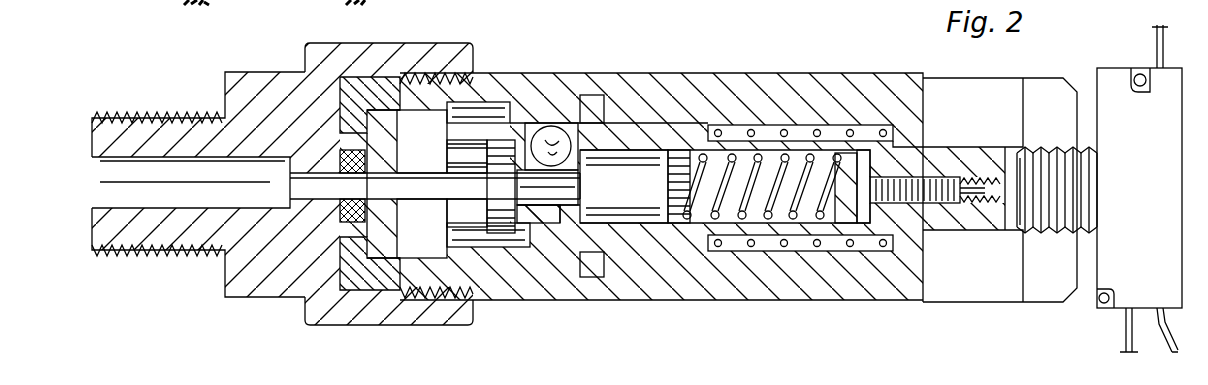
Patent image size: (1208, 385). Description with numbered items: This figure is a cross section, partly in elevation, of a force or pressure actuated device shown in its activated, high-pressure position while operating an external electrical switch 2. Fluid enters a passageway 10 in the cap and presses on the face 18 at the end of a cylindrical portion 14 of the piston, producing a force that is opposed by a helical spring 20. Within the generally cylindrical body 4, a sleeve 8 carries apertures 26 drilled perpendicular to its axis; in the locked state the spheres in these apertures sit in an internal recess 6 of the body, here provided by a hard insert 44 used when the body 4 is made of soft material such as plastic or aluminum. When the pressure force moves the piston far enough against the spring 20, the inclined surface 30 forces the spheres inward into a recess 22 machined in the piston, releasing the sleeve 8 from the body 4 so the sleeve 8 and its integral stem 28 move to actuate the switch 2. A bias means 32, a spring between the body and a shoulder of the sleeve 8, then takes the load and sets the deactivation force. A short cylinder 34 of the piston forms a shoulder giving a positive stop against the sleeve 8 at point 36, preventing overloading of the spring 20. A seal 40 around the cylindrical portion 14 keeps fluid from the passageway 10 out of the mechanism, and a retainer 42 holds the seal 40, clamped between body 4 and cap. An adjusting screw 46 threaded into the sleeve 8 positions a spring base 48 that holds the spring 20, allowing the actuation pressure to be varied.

The electrical switch 2 is at (1118, 86).
The body 4 is at (740, 302).
The internal recess 6 is at (481, 108).
The sleeve 8 is at (914, 228).
The passageway 10 is at (136, 172).
The cylindrical portion 14 is at (322, 204).
The face 18 is at (290, 183).
The spring 20 is at (749, 165).
The recess 22 is at (546, 192).
The apertures 26 is at (566, 150).
The stem 28 is at (969, 167).
The inclined surface 30 is at (528, 121).
The bias means 32 is at (838, 252).
The short cylinder 34 is at (490, 161).
The point 36 is at (524, 212).
The seal 40 is at (350, 205).
The retainer 42 is at (356, 272).
The hard insert 44 is at (589, 265).
The adjusting screw 46 is at (948, 204).
The spring base 48 is at (846, 160).